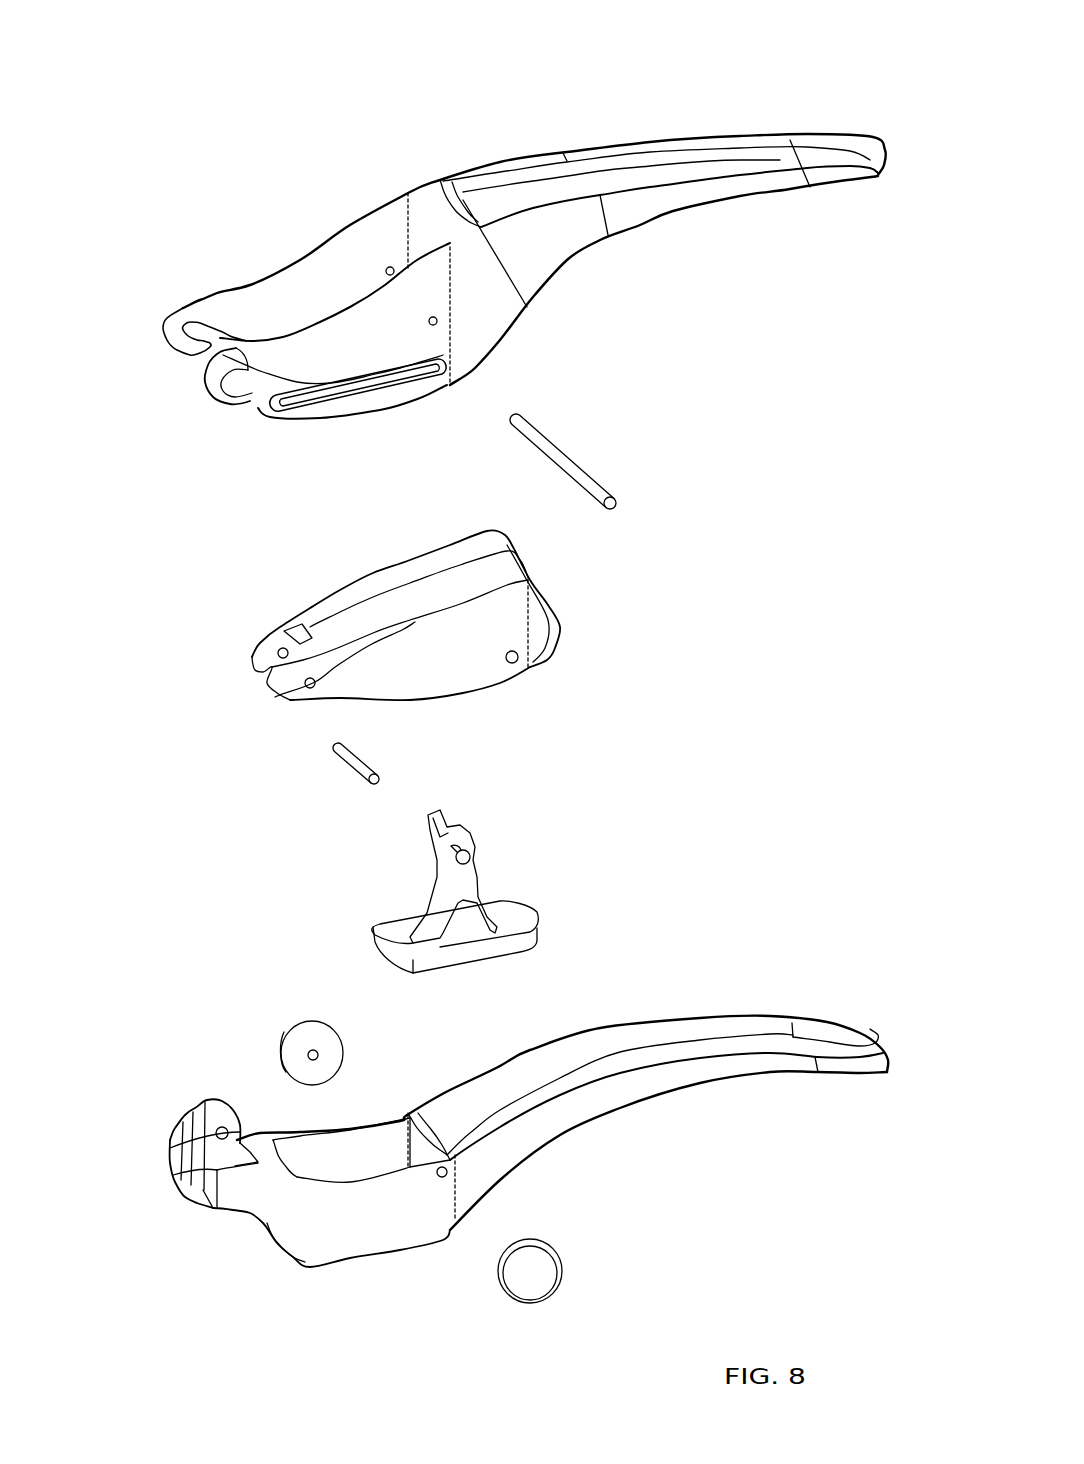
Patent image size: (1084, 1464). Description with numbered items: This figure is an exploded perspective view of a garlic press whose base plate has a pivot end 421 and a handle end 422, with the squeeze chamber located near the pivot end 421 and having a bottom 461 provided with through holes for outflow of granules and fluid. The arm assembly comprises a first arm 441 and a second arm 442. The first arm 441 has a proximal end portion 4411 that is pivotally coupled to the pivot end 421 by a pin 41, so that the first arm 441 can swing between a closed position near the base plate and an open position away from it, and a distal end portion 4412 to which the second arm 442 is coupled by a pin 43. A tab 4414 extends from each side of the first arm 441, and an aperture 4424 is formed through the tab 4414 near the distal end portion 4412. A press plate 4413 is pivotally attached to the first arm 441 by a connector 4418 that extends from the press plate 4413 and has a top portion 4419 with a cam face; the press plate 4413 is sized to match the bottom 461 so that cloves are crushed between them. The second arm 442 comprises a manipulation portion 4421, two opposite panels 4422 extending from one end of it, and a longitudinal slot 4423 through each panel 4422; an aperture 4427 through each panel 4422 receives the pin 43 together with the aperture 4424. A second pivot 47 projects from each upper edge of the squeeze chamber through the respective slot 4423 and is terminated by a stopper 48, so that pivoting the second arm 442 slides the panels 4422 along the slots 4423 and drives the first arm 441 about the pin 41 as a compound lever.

The second arm 442 is at (526, 146).
The manipulation portion 4421 is at (738, 160).
The panels 4422 is at (350, 264).
The slot 4423 is at (240, 342).
The aperture 4427 is at (440, 322).
The pin 43 is at (573, 475).
The first arm 441 is at (368, 562).
The distal end portion 4412 is at (497, 570).
The proximal end portion 4411 is at (258, 645).
The tab 4414 is at (442, 663).
The aperture 4424 is at (530, 660).
The pin 41 is at (340, 763).
The connector 4418 is at (456, 883).
The top portion 4419 is at (440, 830).
The press plate 4413 is at (397, 947).
The stopper 48 is at (320, 1043).
The second pivot 47 is at (450, 1173).
The pivot end 421 is at (217, 1147).
The handle end 422 is at (838, 1062).
The bottom 461 is at (358, 1264).